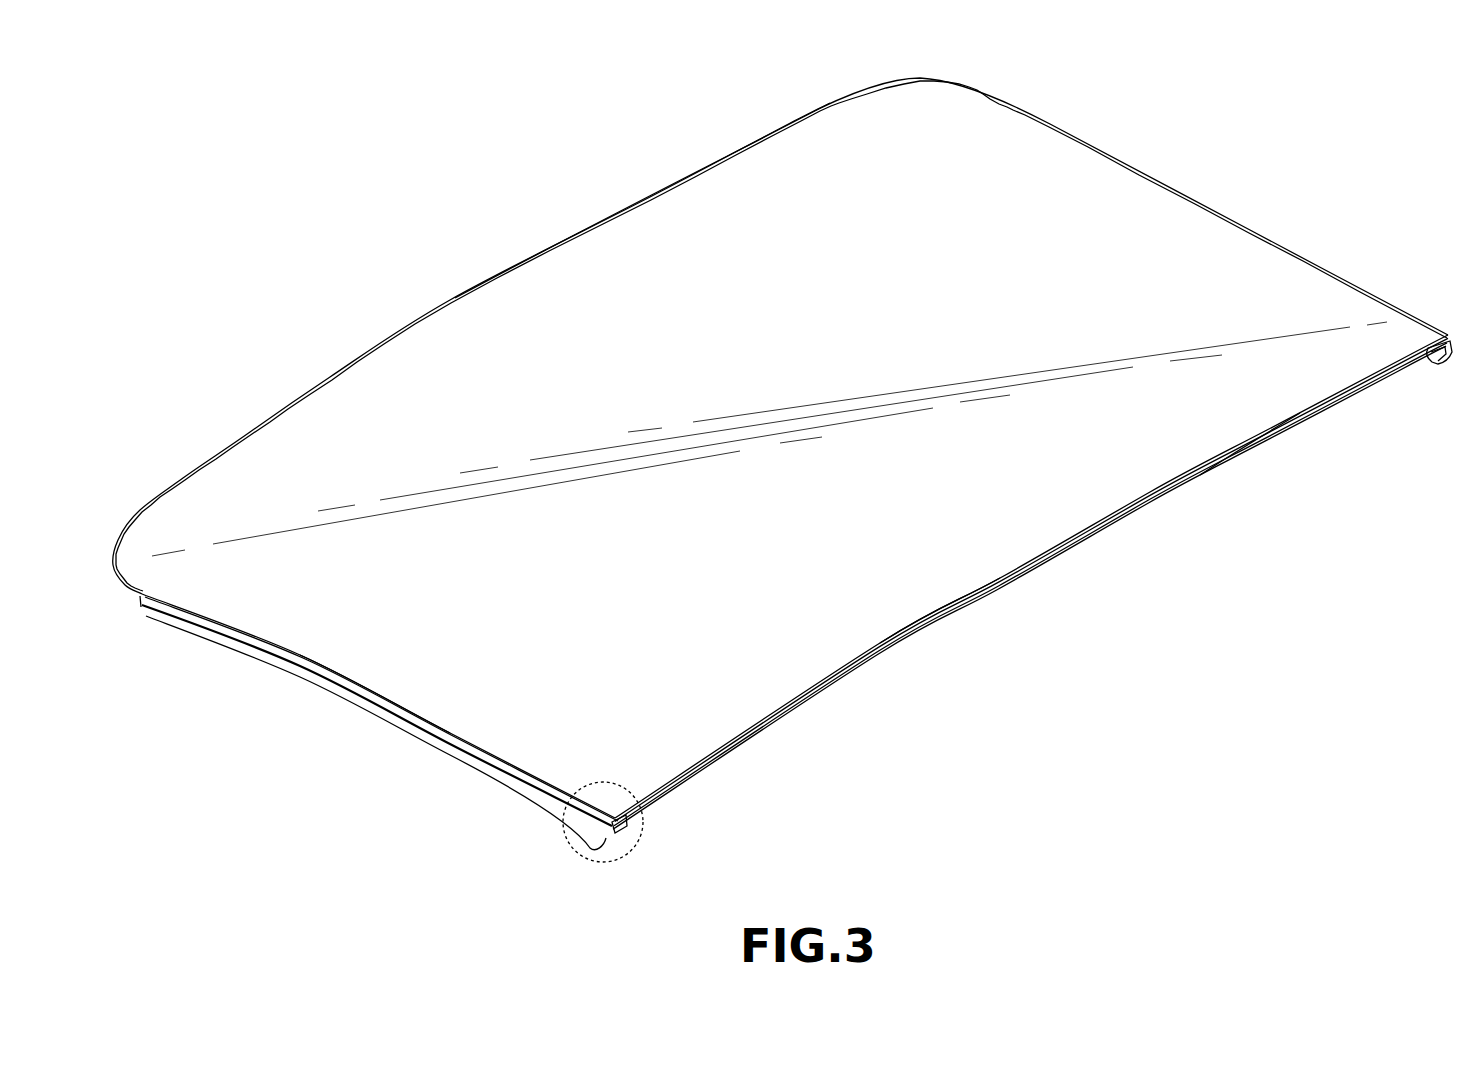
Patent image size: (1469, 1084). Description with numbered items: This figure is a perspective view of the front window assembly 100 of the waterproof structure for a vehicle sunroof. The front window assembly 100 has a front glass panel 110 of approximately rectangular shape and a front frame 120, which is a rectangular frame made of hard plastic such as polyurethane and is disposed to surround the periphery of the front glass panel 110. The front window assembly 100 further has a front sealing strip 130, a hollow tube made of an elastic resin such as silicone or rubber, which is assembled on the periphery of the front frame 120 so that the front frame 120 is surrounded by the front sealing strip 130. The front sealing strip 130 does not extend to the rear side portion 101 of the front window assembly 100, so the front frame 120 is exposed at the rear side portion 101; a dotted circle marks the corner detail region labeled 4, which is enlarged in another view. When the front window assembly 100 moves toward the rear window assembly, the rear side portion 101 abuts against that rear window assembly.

The front window assembly 100 is at (831, 70).
The front glass panel 110 is at (1183, 285).
The rear side portion 101 is at (1203, 475).
The front frame 120 is at (893, 653).
The front sealing strip 130 is at (458, 746).
The detail region of FIG. 4 is at (643, 822).